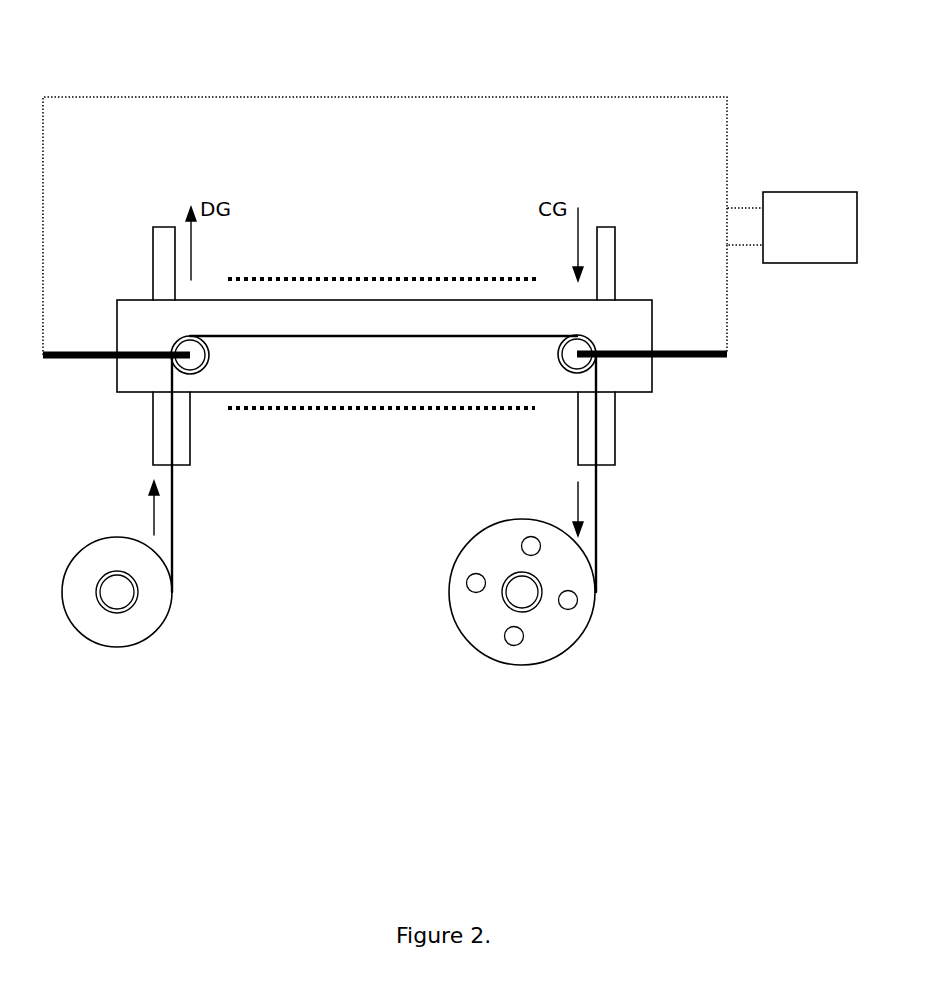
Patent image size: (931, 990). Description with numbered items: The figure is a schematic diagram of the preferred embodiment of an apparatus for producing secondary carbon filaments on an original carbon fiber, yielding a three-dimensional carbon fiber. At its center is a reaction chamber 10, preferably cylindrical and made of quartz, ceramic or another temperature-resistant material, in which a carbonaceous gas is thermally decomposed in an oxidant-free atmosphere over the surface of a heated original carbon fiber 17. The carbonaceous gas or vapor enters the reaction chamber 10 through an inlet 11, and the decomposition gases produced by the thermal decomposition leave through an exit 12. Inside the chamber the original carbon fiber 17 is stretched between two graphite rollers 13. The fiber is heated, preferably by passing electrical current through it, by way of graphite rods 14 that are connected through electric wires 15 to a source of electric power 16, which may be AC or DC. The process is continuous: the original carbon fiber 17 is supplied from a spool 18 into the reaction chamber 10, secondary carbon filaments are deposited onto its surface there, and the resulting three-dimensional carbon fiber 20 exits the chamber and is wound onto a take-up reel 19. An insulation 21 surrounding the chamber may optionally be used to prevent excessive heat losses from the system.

The reaction chamber 10 is at (387, 297).
The inlet 11 is at (617, 260).
The exit 12 is at (155, 263).
The graphite rollers 13 is at (210, 360).
The graphite rods 14 is at (85, 362).
The electric wires 15 is at (680, 97).
The source of electric power 16 is at (820, 263).
The original carbon fiber (OCF) 17 is at (237, 335).
The spool 18 is at (145, 643).
The take-up reel 19 is at (450, 605).
The 3D carbon fiber 20 is at (600, 520).
The insulation 21 is at (440, 410).